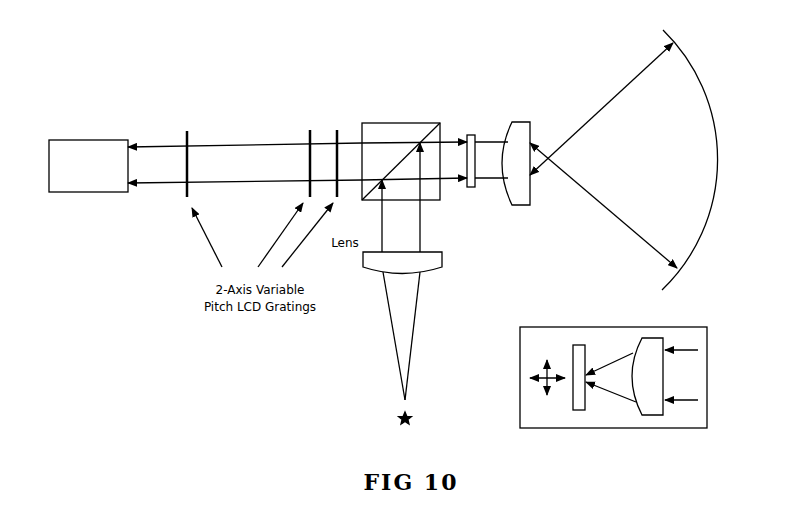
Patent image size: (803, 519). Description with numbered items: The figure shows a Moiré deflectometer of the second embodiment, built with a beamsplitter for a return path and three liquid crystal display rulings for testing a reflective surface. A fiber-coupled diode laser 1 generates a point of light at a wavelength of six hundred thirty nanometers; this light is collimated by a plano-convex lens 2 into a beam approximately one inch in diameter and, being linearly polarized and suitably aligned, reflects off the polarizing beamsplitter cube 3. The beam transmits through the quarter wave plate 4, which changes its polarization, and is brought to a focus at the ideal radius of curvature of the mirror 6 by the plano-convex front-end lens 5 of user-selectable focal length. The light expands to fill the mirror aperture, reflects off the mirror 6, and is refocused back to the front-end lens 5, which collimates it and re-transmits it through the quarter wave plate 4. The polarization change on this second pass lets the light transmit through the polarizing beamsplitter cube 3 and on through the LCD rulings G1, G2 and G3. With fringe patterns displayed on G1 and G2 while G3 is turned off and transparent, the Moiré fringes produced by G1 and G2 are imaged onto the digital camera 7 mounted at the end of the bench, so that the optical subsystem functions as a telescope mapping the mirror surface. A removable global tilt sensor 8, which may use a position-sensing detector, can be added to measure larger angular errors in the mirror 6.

The diode laser 1 is at (391, 418).
The plano-convex lens 2 is at (442, 262).
The polarizing beamsplitter cube 3 is at (365, 123).
The quarter wave plate 4 is at (470, 135).
The plano-convex front-end lens 5 is at (518, 122).
The mirror 6 is at (690, 62).
The camera 7 is at (104, 140).
The global tilt sensor 8 is at (673, 327).
The liquid crystal display ruling G1 is at (334, 130).
The liquid crystal display ruling G2 is at (307, 130).
The liquid crystal display ruling G3 is at (190, 130).